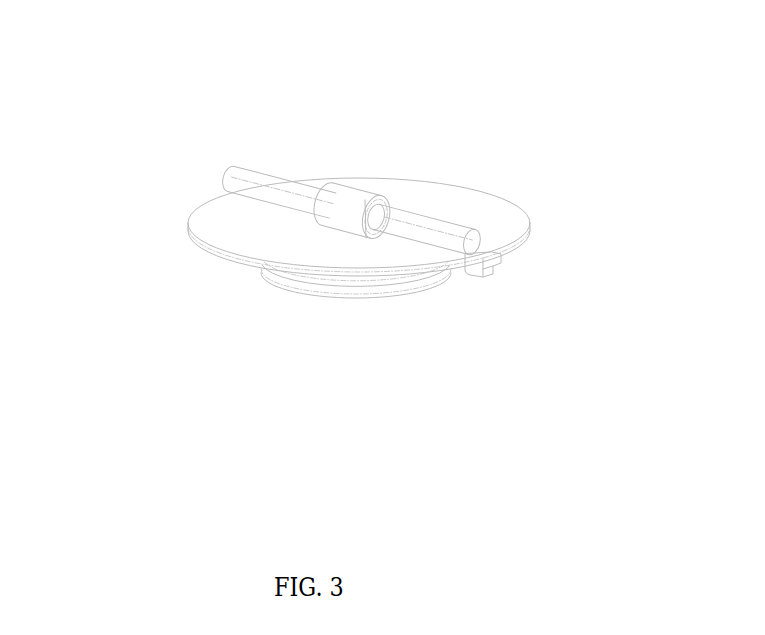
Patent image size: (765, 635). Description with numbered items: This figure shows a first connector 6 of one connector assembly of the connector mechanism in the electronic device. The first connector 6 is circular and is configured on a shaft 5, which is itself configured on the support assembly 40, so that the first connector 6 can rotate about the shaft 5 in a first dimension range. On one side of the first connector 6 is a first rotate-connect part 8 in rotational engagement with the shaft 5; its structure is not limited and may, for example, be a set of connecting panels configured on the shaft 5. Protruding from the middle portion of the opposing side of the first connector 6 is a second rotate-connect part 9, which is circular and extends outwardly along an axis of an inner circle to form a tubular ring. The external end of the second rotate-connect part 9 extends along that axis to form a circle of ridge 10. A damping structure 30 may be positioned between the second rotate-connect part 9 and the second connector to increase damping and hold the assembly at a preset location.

The shaft 5 is at (428, 225).
The first connector 6 is at (366, 183).
The first rotate-connect part 8 is at (350, 210).
The second rotate-connect part 9 is at (342, 289).
The ridge 10 is at (298, 292).
The damping structure 30 is at (327, 367).
The support assembly 40 is at (505, 174).